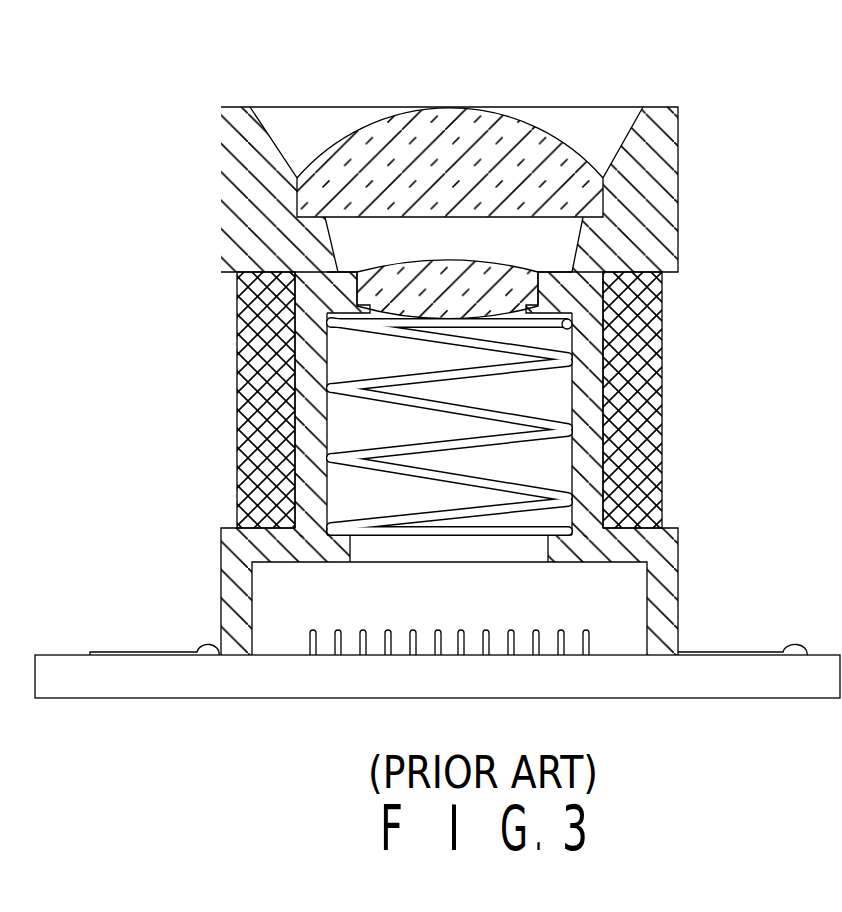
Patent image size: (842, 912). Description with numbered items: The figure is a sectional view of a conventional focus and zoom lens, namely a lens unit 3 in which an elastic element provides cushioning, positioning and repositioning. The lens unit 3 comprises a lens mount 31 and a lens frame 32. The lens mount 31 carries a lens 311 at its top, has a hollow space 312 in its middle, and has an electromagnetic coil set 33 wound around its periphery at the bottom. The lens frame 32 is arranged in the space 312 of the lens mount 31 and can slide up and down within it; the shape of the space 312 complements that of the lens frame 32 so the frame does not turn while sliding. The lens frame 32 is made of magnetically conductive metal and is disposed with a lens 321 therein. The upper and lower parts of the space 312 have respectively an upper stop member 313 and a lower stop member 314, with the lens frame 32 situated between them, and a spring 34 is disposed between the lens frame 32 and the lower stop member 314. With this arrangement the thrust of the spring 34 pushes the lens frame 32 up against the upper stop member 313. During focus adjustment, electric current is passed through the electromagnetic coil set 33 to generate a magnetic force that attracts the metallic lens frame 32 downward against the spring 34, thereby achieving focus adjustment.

The lens unit 3 is at (463, 399).
The lens mount 31 is at (668, 192).
The lens 311 is at (448, 120).
The hollow space 312 is at (550, 460).
The upper stop member 313 is at (300, 280).
The lower stop member 314 is at (337, 548).
The lens frame 32 is at (567, 300).
The lens 321 is at (493, 270).
The electromagnetic coil set 33 is at (662, 378).
The spring 34 is at (327, 377).